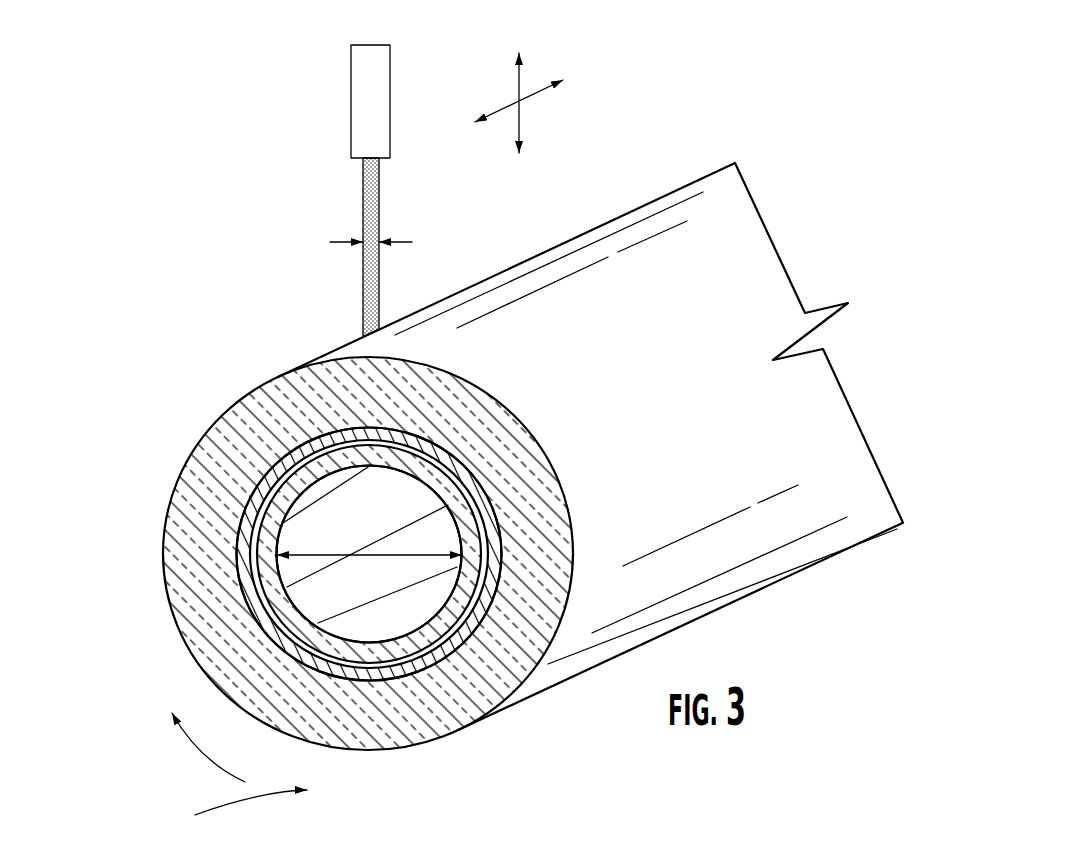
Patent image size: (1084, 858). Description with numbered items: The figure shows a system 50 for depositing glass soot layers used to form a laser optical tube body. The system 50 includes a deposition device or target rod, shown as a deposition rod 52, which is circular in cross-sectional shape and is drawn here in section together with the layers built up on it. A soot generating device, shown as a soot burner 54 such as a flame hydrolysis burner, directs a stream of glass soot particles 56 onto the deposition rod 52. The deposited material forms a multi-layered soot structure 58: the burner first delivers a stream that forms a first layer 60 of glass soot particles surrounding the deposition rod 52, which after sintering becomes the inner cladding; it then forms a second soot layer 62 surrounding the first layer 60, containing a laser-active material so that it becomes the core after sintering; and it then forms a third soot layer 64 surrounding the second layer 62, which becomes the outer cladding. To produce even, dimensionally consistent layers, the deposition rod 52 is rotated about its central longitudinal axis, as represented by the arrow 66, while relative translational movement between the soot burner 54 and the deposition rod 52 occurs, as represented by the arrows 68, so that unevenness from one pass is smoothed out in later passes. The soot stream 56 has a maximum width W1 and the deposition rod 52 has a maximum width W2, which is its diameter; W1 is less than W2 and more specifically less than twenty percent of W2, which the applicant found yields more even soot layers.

The system 50 is at (627, 93).
The deposition rod 52 is at (385, 608).
The soot burner 54 is at (385, 80).
The glass soot particles 56 is at (375, 202).
The multi-layered soot structure 58 is at (332, 560).
The first layer of glass soot particles 60 is at (265, 578).
The second soot layer 62 is at (242, 539).
The third soot layer 64 is at (207, 489).
The arrow 66 is at (237, 773).
The arrows 68 is at (545, 55).
The maximum width of soot stream W1 is at (342, 242).
The maximum width of deposition rod W2 is at (370, 553).